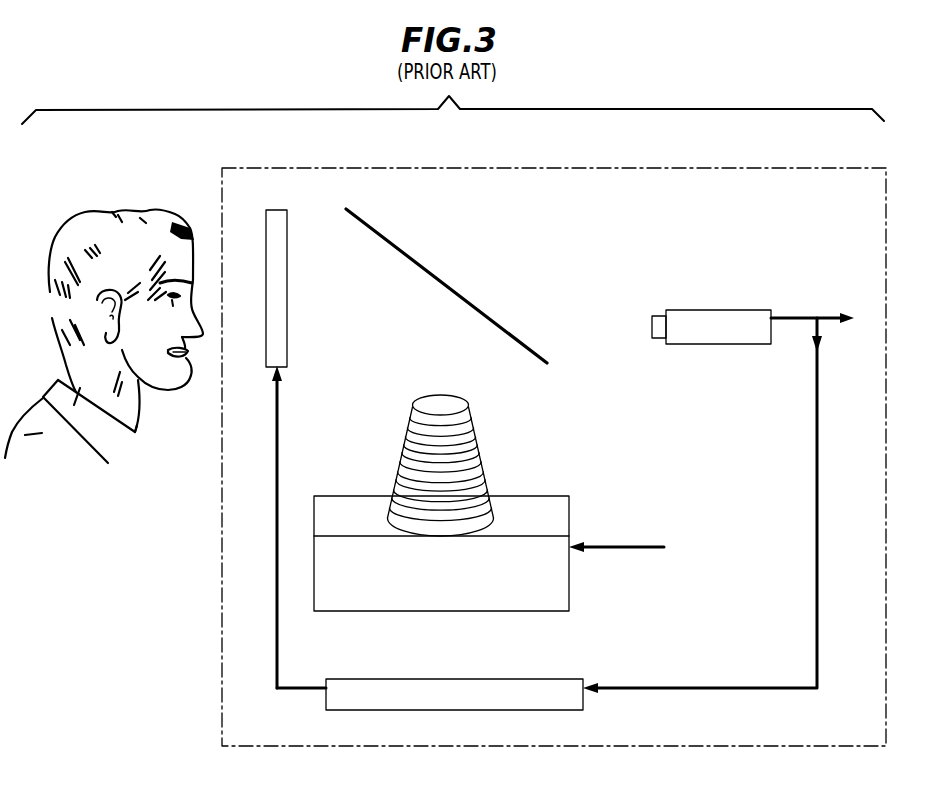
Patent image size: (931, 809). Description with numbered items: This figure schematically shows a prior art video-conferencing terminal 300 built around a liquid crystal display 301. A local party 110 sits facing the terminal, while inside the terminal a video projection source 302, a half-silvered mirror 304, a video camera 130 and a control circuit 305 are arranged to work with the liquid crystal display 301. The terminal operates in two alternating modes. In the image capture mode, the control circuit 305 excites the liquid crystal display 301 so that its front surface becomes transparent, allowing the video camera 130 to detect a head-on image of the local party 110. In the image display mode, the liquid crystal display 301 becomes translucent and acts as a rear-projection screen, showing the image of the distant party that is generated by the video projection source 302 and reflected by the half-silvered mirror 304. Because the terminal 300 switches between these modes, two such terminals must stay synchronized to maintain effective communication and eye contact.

The local party 110 is at (86, 202).
The video-conferencing terminal 300 is at (632, 168).
The liquid crystal display 301 is at (278, 210).
The video projection source 302 is at (517, 524).
The half-silvered mirror 304 is at (443, 283).
The control circuit 305 is at (360, 679).
The video camera 130 is at (699, 310).